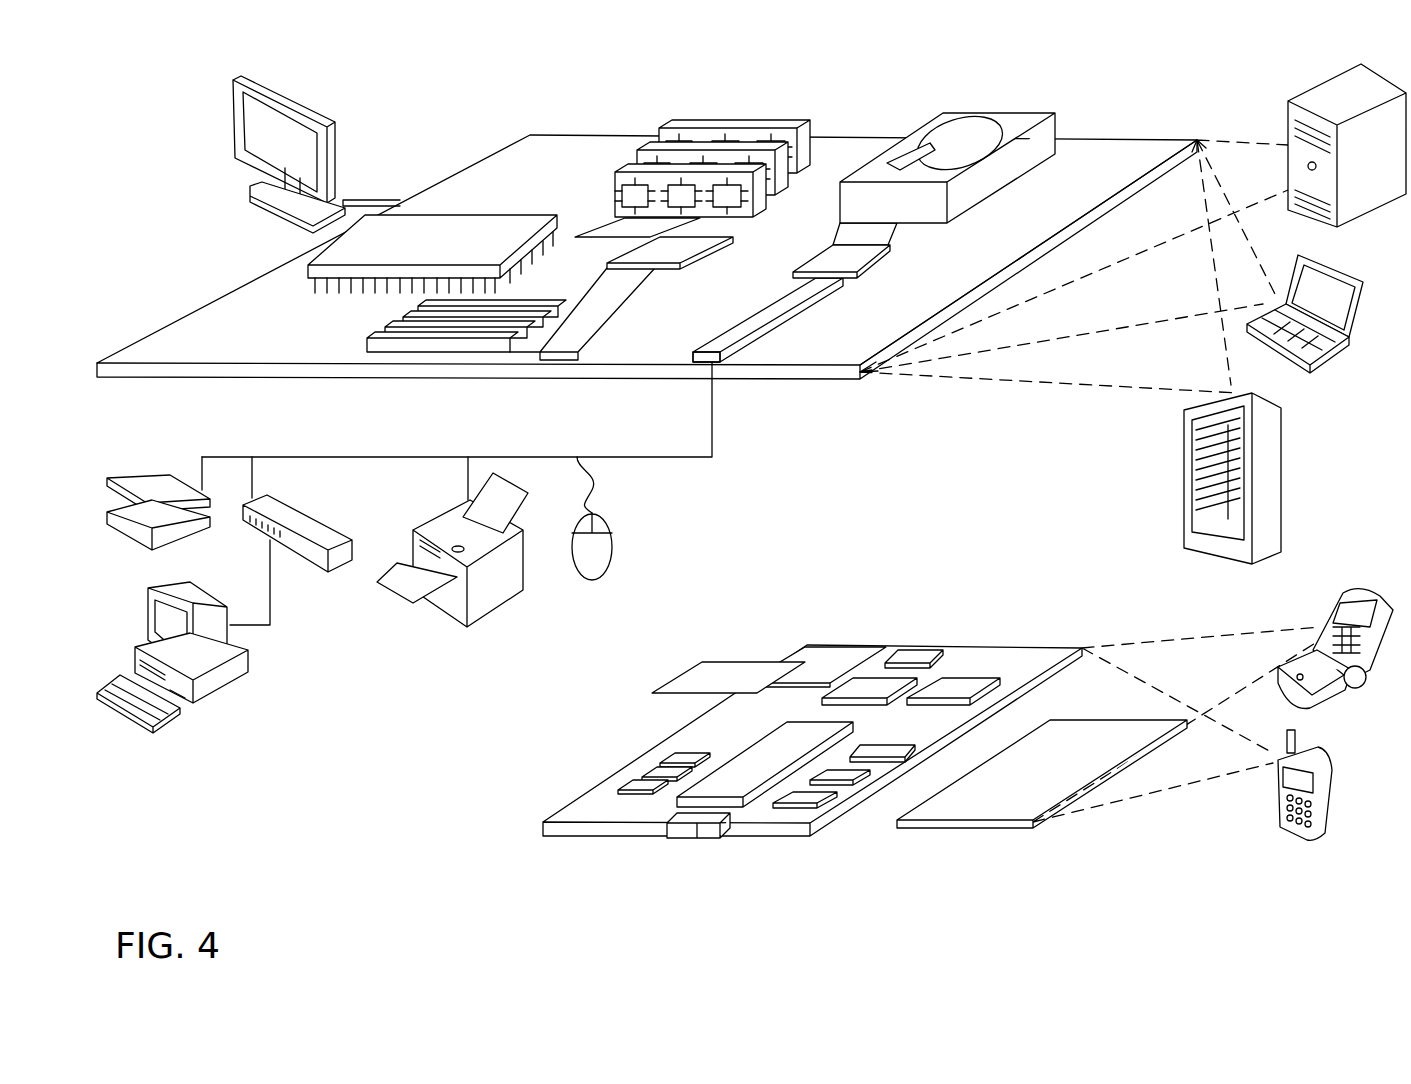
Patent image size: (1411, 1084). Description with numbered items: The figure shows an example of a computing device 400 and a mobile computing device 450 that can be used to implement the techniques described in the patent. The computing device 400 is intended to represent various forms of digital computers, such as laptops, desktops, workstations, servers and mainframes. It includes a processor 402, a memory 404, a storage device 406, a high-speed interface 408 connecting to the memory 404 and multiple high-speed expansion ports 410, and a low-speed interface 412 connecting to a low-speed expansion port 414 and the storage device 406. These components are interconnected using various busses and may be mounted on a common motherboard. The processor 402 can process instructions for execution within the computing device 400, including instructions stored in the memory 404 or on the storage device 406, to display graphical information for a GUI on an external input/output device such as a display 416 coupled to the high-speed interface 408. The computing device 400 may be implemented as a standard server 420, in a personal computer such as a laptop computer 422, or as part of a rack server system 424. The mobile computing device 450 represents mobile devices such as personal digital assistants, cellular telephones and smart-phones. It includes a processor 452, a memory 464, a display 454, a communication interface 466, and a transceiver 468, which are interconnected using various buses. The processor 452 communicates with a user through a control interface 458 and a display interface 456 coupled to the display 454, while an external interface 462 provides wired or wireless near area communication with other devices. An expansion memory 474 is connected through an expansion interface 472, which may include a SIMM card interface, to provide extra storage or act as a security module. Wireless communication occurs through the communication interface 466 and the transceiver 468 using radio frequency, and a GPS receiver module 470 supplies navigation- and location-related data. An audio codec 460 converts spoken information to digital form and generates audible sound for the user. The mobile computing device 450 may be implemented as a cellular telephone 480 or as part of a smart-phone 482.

The computing device 400 is at (449, 111).
The processor 402 is at (313, 270).
The memory 404 is at (690, 125).
The storage device 406 is at (938, 117).
The high-speed interface 408 is at (643, 250).
The high-speed expansion ports 410 is at (393, 333).
The low-speed interface 412 is at (837, 252).
The low-speed expansion port 414 is at (727, 362).
The display 416 is at (235, 90).
The standard server 420 is at (1288, 113).
The laptop computer 422 is at (1358, 284).
The rack server system 424 is at (1182, 500).
The mobile computing device 450 is at (515, 832).
The processor 452 is at (733, 795).
The display 454 is at (997, 808).
The display interface 456 is at (812, 795).
The control interface 458 is at (863, 782).
The audio codec 460 is at (883, 752).
The external interface 462 is at (695, 823).
The memory 464 is at (637, 777).
The communication interface 466 is at (870, 687).
The transceiver 468 is at (953, 687).
The GPS receiver module 470 is at (925, 650).
The expansion interface 472 is at (790, 660).
The expansion memory 474 is at (707, 657).
The cellular telephone 480 is at (1337, 565).
The smart-phone 482 is at (1277, 793).